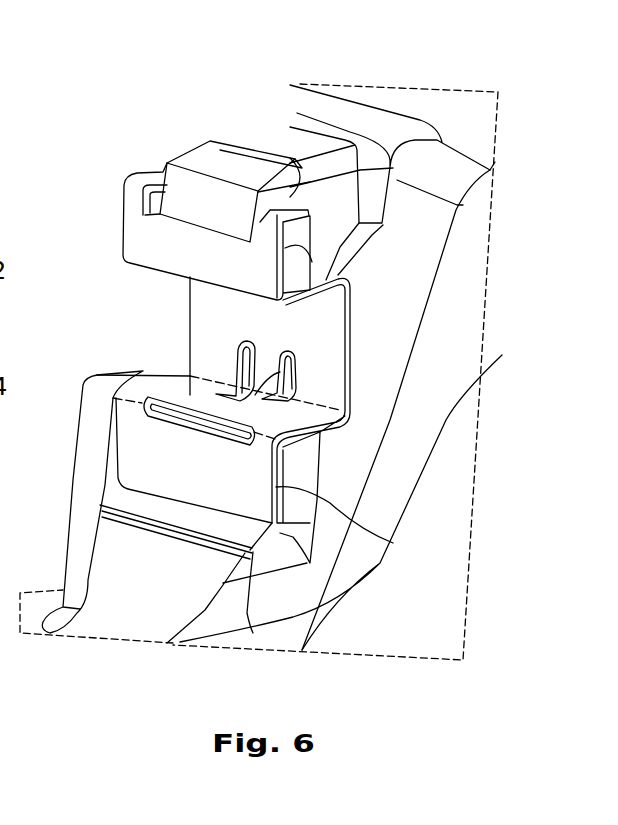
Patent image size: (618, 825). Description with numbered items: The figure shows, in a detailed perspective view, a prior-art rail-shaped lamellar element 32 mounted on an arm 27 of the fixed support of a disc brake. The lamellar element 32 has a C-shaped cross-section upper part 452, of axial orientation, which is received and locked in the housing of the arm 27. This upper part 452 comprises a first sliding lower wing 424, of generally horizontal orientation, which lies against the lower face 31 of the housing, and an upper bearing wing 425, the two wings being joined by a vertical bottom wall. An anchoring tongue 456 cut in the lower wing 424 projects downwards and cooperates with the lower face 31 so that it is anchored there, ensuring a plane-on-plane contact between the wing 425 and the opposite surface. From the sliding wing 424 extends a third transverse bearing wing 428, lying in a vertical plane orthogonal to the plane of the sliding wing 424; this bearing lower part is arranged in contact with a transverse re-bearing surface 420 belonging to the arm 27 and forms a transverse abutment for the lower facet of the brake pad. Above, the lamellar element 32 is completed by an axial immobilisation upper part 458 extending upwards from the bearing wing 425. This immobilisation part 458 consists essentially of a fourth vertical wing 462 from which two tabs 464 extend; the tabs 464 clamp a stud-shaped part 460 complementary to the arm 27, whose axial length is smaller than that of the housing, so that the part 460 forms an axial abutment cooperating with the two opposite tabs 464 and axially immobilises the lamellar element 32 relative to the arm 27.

The arm 27 is at (452, 245).
The lower face 31 is at (302, 437).
The rail-shaped lamellar element 32 is at (243, 312).
The transverse re-bearing surface 420 is at (393, 543).
The first sliding lower wing 424 is at (188, 395).
The upper bearing wing 425 is at (342, 313).
The third transverse bearing wing 428 is at (160, 453).
The C-shaped cross-section upper part 452 is at (362, 347).
The anchoring tongue 456 is at (345, 392).
The axial immobilisation upper part 458 is at (173, 254).
The complementary part 460 is at (202, 203).
The fourth vertical wing 462 is at (168, 232).
The tabs 464 is at (300, 157).